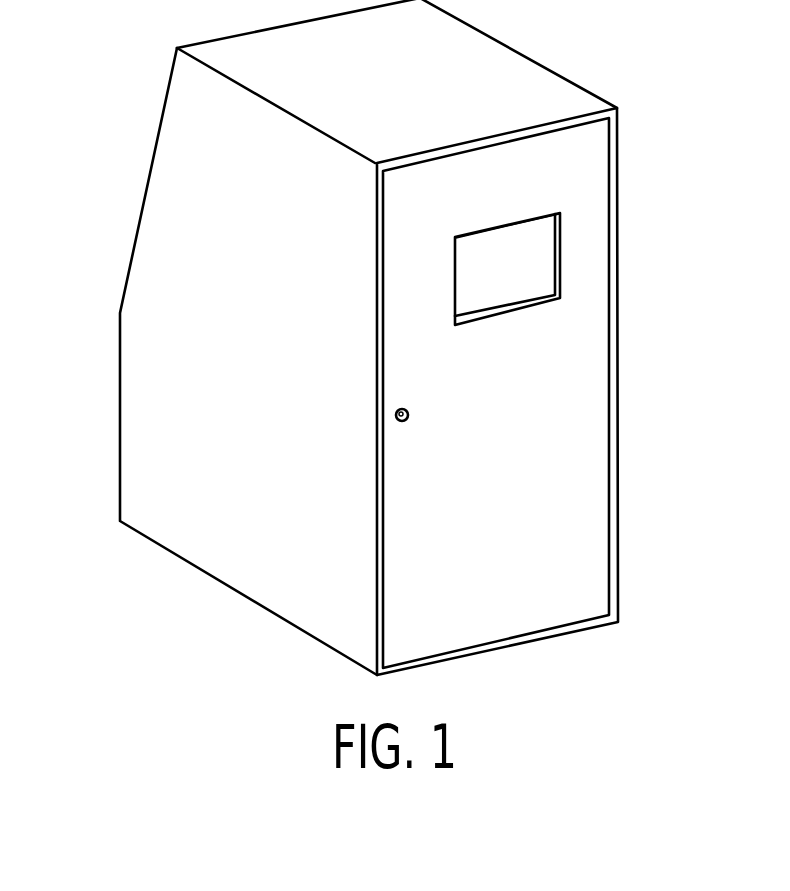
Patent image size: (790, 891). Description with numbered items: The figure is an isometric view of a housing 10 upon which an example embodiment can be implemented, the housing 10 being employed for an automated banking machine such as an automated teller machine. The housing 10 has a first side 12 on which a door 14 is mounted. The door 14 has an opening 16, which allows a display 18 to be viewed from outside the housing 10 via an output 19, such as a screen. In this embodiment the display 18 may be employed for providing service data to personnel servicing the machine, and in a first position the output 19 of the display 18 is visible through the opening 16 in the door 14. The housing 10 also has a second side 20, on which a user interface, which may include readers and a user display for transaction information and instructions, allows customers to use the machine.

The housing 10 is at (126, 140).
The second side 20 is at (116, 210).
The first side 12 is at (642, 369).
The door 14 is at (592, 477).
The opening 16 is at (550, 283).
The display 18 is at (547, 247).
The output 19 is at (473, 255).